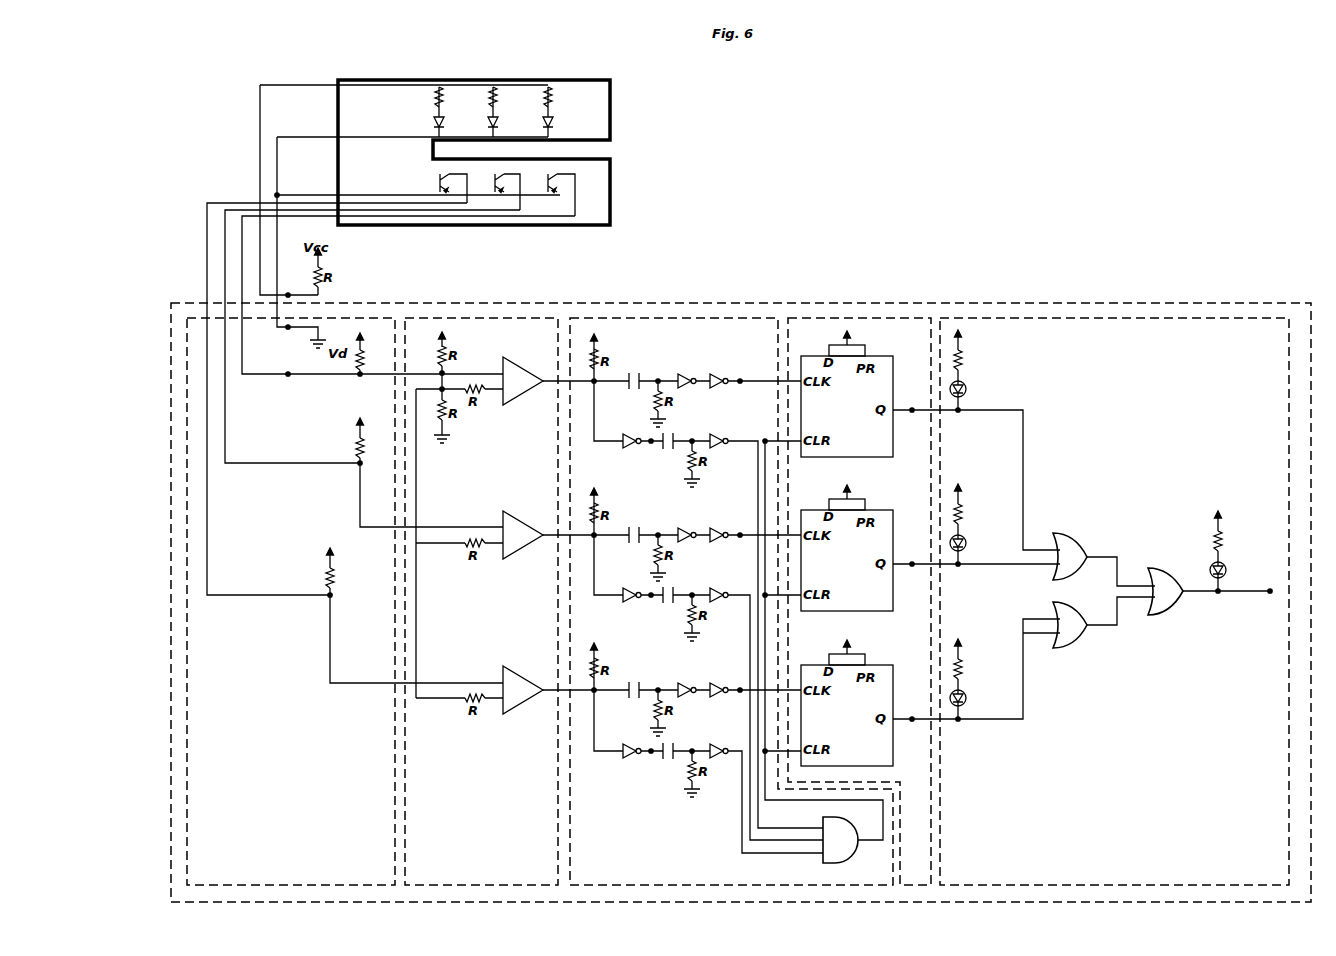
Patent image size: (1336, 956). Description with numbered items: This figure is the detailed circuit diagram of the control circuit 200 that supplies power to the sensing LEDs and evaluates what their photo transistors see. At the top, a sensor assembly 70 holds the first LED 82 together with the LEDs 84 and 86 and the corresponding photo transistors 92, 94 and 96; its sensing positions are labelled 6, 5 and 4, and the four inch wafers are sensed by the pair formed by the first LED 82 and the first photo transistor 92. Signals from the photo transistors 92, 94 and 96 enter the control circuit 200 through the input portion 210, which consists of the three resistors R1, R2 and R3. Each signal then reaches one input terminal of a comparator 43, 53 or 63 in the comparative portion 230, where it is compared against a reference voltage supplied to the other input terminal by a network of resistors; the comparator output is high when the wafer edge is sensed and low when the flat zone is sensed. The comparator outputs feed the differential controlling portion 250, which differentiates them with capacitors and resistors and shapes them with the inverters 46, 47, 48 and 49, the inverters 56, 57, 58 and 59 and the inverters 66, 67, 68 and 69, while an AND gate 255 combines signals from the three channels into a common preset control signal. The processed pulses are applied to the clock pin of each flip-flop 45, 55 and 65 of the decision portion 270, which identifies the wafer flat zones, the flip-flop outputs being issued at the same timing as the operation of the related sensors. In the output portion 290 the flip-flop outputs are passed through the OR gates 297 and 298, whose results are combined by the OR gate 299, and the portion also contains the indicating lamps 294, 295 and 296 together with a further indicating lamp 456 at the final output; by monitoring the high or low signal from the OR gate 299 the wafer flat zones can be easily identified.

The connector block 70 is at (578, 80).
The LED 86 is at (446, 126).
The LED 84 is at (500, 126).
The first LED 82 is at (555, 126).
The photo transistor 96 is at (437, 184).
The photo transistor 94 is at (492, 184).
The first photo transistor 92 is at (545, 184).
The optical path 6 is at (461, 145).
The optical path 5 is at (513, 145).
The optical path 4 is at (573, 145).
The control circuit 200 is at (748, 303).
The input portion 210 is at (290, 885).
The comparative portion 230 is at (495, 885).
The differential controlling portion 250 is at (680, 885).
The decision portion 270 is at (860, 318).
The output portion 290 is at (1110, 885).
The first comparator 43 is at (525, 398).
The comparator 53 is at (525, 552).
The comparator 63 is at (525, 707).
The flip-flop 45 is at (882, 356).
The flip-flop 55 is at (882, 510).
The flip-flop 65 is at (882, 665).
The inverter 46 is at (681, 375).
The inverter 47 is at (714, 375).
The inverter 48 is at (626, 448).
The inverter 49 is at (714, 435).
The inverter 56 is at (681, 529).
The inverter 57 is at (714, 529).
The inverter 58 is at (626, 602).
The inverter 59 is at (714, 589).
The inverter 66 is at (681, 684).
The inverter 67 is at (714, 684).
The inverter 68 is at (626, 758).
The inverter 69 is at (714, 745).
The AND gate 255 is at (850, 862).
The indicating lamp 294 is at (966, 392).
The indicating lamp 295 is at (966, 546).
The indicating lamp 296 is at (966, 701).
The OR gate 297 is at (1070, 545).
The OR gate 298 is at (1070, 640).
The OR gate 299 is at (1162, 580).
The indicating lamp 456 is at (1228, 570).
The resistor R1 is at (370, 353).
The resistor R2 is at (429, 472).
The resistor R3 is at (414, 615).